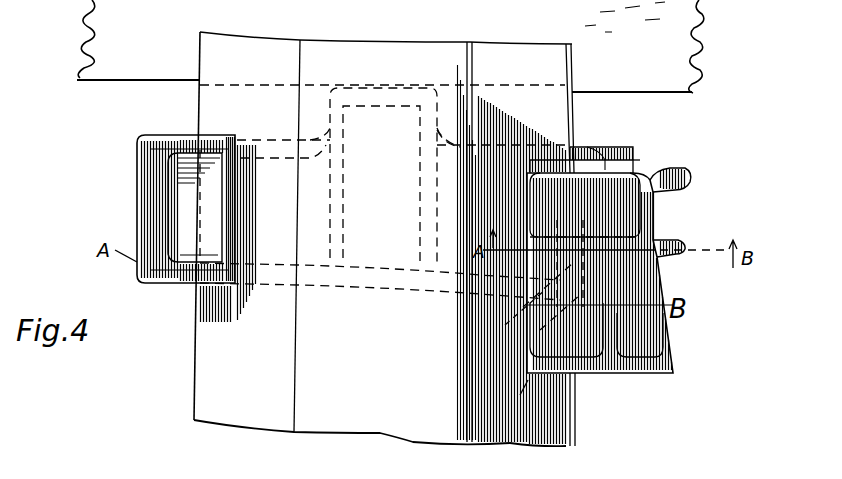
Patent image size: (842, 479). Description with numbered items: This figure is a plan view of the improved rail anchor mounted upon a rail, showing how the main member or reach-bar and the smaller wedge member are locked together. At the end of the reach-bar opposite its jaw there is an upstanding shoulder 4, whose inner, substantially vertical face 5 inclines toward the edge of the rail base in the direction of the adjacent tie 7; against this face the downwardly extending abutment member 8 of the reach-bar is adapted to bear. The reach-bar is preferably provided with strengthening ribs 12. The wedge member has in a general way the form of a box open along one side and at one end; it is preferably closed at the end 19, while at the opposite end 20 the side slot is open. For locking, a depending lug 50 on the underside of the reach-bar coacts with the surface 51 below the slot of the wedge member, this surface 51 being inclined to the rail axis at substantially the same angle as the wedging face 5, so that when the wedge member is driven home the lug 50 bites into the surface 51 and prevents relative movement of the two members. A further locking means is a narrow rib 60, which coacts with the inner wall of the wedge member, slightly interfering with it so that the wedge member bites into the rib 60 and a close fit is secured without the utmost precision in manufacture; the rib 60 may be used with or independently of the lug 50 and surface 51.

The upstanding shoulder 4 is at (583, 137).
The inner substantially vertical face 5 is at (587, 147).
The tie 7 is at (390, 46).
The abutment member 8 is at (377, 100).
The strengthening ribs 12 is at (290, 283).
The closed end of wedge member 19 is at (630, 372).
The open end of wedge member 20 is at (650, 160).
The depending lug 50 is at (512, 319).
The locking surface 51 is at (513, 397).
The rib 60 is at (649, 136).